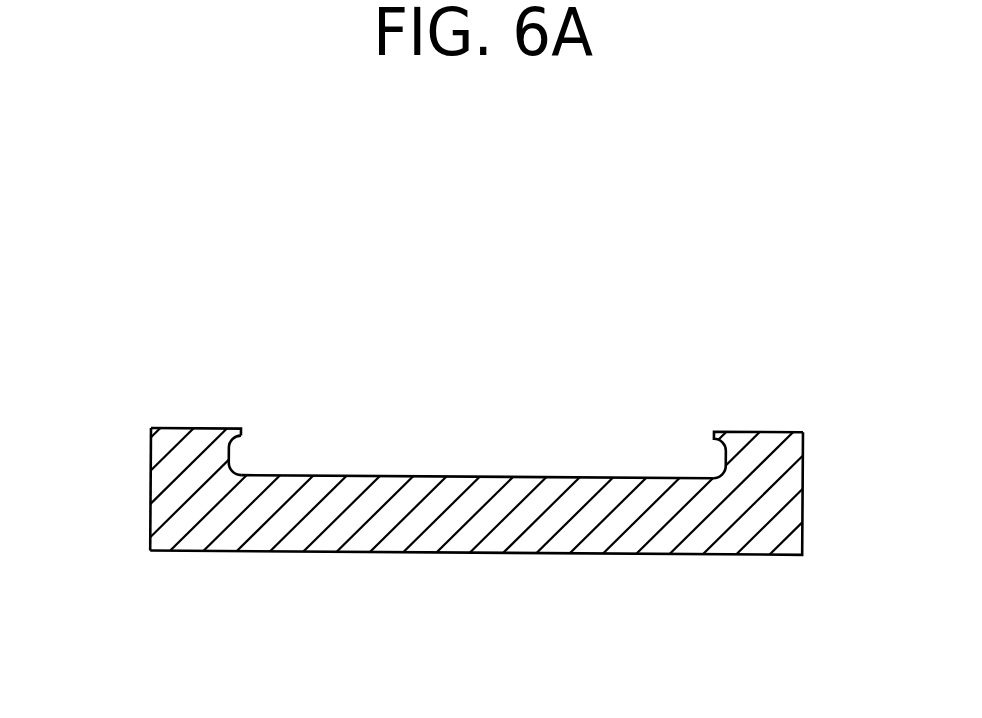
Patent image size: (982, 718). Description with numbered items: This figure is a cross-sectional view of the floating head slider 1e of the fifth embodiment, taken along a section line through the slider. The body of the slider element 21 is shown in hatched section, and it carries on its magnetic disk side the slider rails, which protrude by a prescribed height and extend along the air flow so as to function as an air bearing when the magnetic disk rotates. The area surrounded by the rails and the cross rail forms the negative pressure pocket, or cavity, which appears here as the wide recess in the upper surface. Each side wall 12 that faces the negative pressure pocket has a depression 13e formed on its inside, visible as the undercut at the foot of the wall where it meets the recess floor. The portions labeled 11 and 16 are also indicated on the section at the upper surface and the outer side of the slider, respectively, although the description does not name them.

The floating head slider 1e is at (880, 230).
The slider body 11 is at (197, 427).
The side wall 12 is at (240, 436).
The depression 13e is at (233, 452).
The side surface 16 is at (150, 470).
The slider element 21 is at (438, 475).